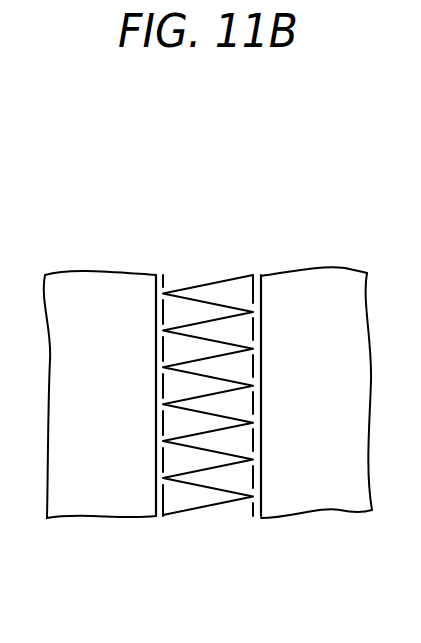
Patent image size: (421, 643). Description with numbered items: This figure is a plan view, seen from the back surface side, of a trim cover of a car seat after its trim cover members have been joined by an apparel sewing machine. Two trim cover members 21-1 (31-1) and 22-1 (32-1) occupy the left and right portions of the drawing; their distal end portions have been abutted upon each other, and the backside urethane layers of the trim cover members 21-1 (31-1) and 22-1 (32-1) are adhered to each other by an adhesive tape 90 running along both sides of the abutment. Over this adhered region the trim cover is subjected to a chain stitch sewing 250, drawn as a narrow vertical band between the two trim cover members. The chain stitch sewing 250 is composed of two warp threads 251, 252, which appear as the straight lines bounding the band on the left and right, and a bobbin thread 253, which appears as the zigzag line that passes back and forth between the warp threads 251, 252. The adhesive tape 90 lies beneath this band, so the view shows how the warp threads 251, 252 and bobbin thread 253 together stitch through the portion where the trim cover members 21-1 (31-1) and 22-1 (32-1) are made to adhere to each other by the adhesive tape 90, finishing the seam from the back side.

The chain stitch sewing 250 is at (298, 222).
The warp thread 251 is at (158, 312).
The warp thread 252 is at (254, 322).
The bobbin thread 253 is at (203, 280).
The adhesive tape 90 is at (163, 488).
The trim cover member 22-1 is at (100, 432).
The trim cover member 32-1 is at (90, 497).
The trim cover member 21-1 is at (316, 428).
The trim cover member 31-1 is at (308, 495).